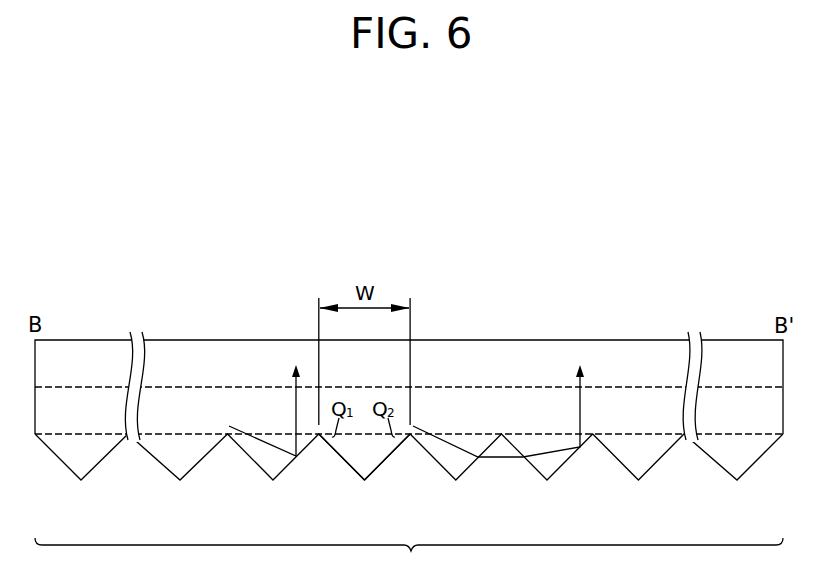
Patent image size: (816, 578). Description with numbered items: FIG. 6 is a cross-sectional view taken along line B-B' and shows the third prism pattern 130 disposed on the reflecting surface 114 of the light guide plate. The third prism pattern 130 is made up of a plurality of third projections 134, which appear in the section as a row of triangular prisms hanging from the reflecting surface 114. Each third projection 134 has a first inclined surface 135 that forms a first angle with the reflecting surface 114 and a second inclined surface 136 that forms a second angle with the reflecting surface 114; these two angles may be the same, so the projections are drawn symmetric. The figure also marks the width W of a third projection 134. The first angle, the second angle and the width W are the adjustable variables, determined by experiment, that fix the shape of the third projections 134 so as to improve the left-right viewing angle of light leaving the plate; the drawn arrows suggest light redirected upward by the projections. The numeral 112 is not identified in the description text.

The upper surface of light guide plate 112 is at (633, 387).
The reflecting surface 114 is at (665, 433).
The third prism pattern 130 is at (409, 431).
The third projection 134 is at (365, 485).
The first inclined surface 135 is at (337, 460).
The second inclined surface 136 is at (396, 461).